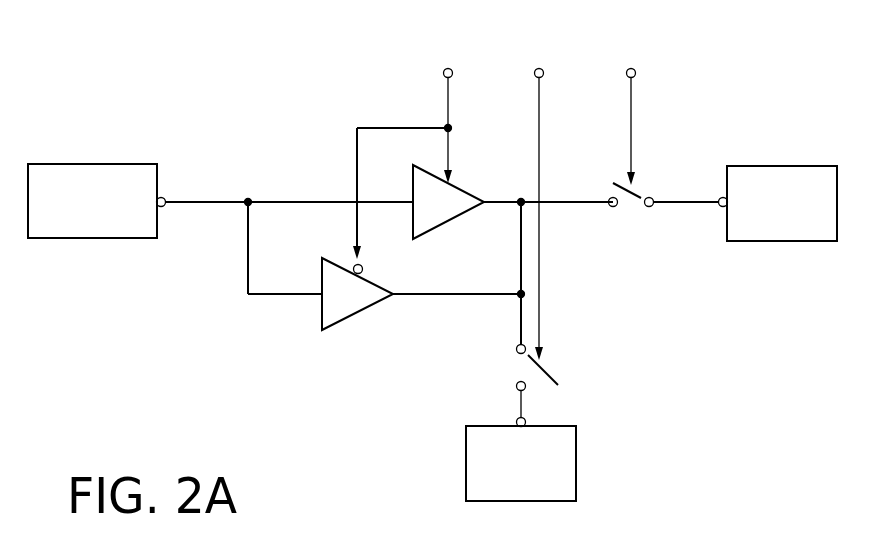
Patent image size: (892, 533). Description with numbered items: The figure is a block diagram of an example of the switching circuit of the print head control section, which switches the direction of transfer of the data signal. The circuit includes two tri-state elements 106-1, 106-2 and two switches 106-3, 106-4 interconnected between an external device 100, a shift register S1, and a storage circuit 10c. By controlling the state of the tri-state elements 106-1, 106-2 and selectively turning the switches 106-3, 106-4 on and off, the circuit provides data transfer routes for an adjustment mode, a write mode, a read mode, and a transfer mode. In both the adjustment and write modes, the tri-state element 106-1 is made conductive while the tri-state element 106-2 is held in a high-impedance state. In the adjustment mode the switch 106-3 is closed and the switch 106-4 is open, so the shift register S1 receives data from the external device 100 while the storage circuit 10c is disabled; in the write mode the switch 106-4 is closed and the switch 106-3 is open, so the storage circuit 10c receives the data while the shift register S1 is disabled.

The external device 100 is at (90, 238).
The tri-state element 106-1 is at (458, 200).
The tri-state element 106-2 is at (347, 293).
The switch 106-3 is at (632, 205).
The switch 106-4 is at (535, 380).
The shift register S1 is at (780, 241).
The storage circuit 10c is at (466, 458).